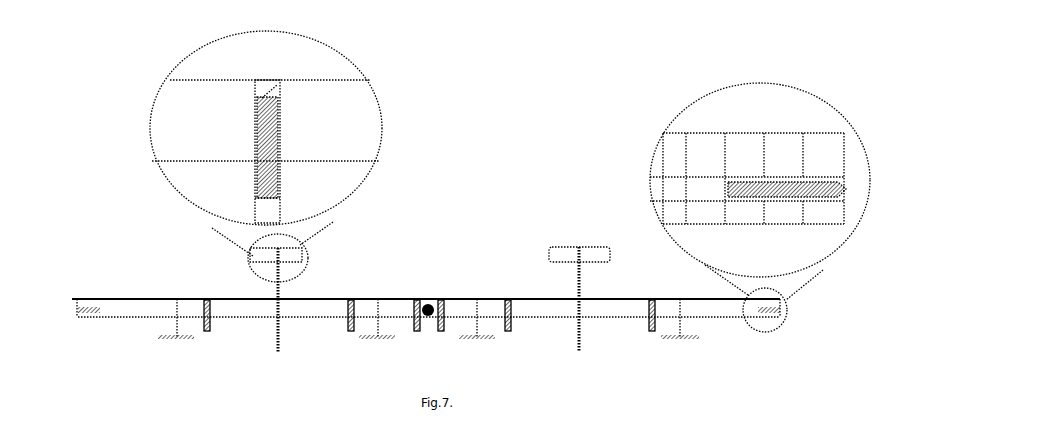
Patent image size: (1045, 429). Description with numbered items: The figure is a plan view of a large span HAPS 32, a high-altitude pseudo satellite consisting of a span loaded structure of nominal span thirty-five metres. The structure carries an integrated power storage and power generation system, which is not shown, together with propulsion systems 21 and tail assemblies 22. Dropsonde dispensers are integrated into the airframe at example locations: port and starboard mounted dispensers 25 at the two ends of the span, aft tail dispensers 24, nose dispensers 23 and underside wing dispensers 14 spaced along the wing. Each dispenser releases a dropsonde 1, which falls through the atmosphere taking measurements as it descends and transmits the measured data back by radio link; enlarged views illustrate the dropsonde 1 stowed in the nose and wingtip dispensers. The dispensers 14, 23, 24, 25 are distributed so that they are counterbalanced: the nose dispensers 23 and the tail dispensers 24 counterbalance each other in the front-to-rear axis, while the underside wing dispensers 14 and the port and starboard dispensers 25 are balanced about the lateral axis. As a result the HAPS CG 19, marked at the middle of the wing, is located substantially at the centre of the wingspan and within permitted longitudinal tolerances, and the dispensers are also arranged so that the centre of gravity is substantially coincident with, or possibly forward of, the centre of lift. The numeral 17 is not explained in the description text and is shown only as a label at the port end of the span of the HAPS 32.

The dropsonde 1 is at (262, 71).
The underside wing dispensers 14 is at (214, 346).
The rail end 17 is at (68, 298).
The HAPS CG 19 is at (429, 318).
The propulsion systems 21 is at (172, 346).
The tail assemblies 22 is at (566, 247).
The nose dispensers 23 is at (279, 346).
The aft tail dispensers 24 is at (284, 243).
The port and starboard mounted dispensers 25 is at (76, 309).
The large span HAPS 32 is at (147, 298).